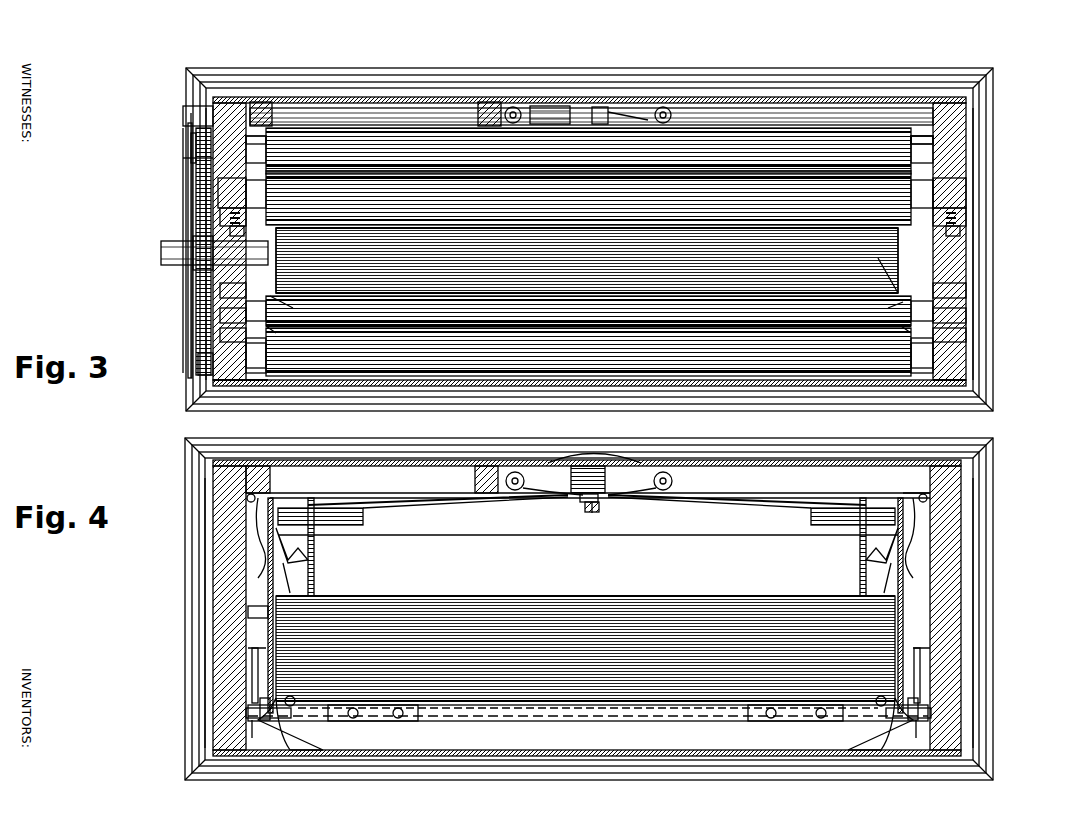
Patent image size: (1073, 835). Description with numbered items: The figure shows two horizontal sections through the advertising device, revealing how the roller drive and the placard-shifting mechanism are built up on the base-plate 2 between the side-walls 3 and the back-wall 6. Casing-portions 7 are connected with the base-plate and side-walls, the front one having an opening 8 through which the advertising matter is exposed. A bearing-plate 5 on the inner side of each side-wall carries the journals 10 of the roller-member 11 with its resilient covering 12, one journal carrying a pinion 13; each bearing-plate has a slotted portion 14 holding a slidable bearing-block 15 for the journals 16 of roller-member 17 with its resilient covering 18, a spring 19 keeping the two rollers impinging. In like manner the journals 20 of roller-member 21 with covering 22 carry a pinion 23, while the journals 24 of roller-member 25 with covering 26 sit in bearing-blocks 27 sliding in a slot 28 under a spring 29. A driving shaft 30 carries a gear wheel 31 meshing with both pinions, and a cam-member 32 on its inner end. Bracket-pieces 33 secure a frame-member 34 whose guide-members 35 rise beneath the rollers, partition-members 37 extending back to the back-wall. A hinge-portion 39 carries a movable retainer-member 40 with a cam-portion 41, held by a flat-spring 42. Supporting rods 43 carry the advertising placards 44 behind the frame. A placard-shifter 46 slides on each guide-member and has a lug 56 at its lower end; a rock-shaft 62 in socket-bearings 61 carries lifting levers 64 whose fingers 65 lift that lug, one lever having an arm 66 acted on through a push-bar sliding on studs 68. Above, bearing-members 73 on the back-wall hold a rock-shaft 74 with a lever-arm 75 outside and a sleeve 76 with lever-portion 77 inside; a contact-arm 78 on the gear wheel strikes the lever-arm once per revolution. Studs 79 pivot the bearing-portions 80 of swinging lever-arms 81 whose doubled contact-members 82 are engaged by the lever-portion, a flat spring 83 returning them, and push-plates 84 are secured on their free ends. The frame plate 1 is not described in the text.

In FIG. 3, the frame plate 1 is at (157, 250).
In FIG. 3, the base-plate 2 is at (246, 60).
In FIG. 4, the base-plate 2 is at (965, 400).
In FIG. 3, the side-walls 3 is at (205, 300).
In FIG. 4, the side-walls 3 is at (205, 522).
In FIG. 3, the bearing-plate 5 is at (586, 281).
In FIG. 4, the bearing-plate 5 is at (575, 458).
In FIG. 3, the back-wall 6 is at (770, 105).
In FIG. 4, the back-wall 6 is at (775, 468).
In FIG. 3, the casing-portions 7 is at (730, 92).
In FIG. 4, the casing-portions 7 is at (712, 452).
In FIG. 4, the opening 8 is at (340, 712).
In FIG. 3, the journals 10 is at (238, 352).
In FIG. 3, the roller-member 11 is at (240, 378).
In FIG. 3, the resilient covering 12 is at (589, 352).
In FIG. 3, the pinion 13 is at (195, 355).
In FIG. 3, the slotted portion 14 is at (212, 282).
In FIG. 3, the slidable bearing-block 15 is at (212, 330).
In FIG. 3, the journals 16 is at (212, 308).
In FIG. 3, the roller-member 17 is at (588, 333).
In FIG. 3, the resilient covering 18 is at (589, 311).
In FIG. 3, the spring 19 is at (190, 285).
In FIG. 3, the journals 20 is at (180, 120).
In FIG. 3, the roller-member 21 is at (238, 135).
In FIG. 3, the resilient covering 22 is at (589, 149).
In FIG. 3, the pinion 23 is at (184, 133).
In FIG. 3, the journals 24 is at (225, 178).
In FIG. 3, the roller-member 25 is at (215, 205).
In FIG. 3, the resilient covering 26 is at (589, 199).
In FIG. 3, the bearing-blocks 27 is at (222, 212).
In FIG. 3, the slot 28 is at (225, 225).
In FIG. 3, the spring 29 is at (292, 230).
In FIG. 3, the driving shaft 30 is at (170, 245).
In FIG. 3, the gear wheel 31 is at (185, 262).
In FIG. 3, the cam-member 32 is at (588, 189).
In FIG. 4, the bracket-pieces 33 is at (395, 708).
In FIG. 4, the frame-member 34 is at (610, 700).
In FIG. 4, the guide-member 35 is at (290, 700).
In FIG. 3, the partition-members 37 is at (588, 312).
In FIG. 4, the partition-members 37 is at (260, 565).
In FIG. 4, the hinge-portion 39 is at (240, 490).
In FIG. 4, the movable retainer-member 40 is at (282, 575).
In FIG. 4, the cam-portion 41 is at (290, 545).
In FIG. 4, the flat-spring 42 is at (250, 555).
In FIG. 4, the supporting rods 43 is at (306, 547).
In FIG. 3, the advertising placards 44 is at (562, 232).
In FIG. 4, the advertising placards 44 is at (520, 600).
In FIG. 4, the placard-shifter 46 is at (295, 720).
In FIG. 4, the lug 56 is at (250, 700).
In FIG. 4, the socket-bearings 61 is at (245, 640).
In FIG. 4, the rock-shaft 62 is at (247, 660).
In FIG. 4, the lifting levers 64 is at (238, 705).
In FIG. 4, the fingers 65 is at (245, 725).
In FIG. 4, the arm 66 is at (245, 628).
In FIG. 4, the studs 68 is at (300, 548).
In FIG. 3, the bearing-members 73 is at (258, 96).
In FIG. 4, the bearing-members 73 is at (255, 468).
In FIG. 3, the rock-shaft 74 is at (388, 104).
In FIG. 3, the lever-arm 75 is at (182, 145).
In FIG. 3, the sleeve 76 is at (552, 100).
In FIG. 3, the lever-portion 77 is at (602, 100).
In FIG. 4, the lever-portion 77 is at (584, 505).
In FIG. 3, the contact-arm 78 is at (175, 175).
In FIG. 3, the studs 79 is at (510, 100).
In FIG. 4, the studs 79 is at (510, 464).
In FIG. 4, the bearing-portions 80 is at (520, 490).
In FIG. 4, the swinging lever-arms 81 is at (450, 498).
In FIG. 4, the contact-members 82 is at (576, 494).
In FIG. 4, the flat spring 83 is at (582, 458).
In FIG. 4, the push-plates 84 is at (350, 506).